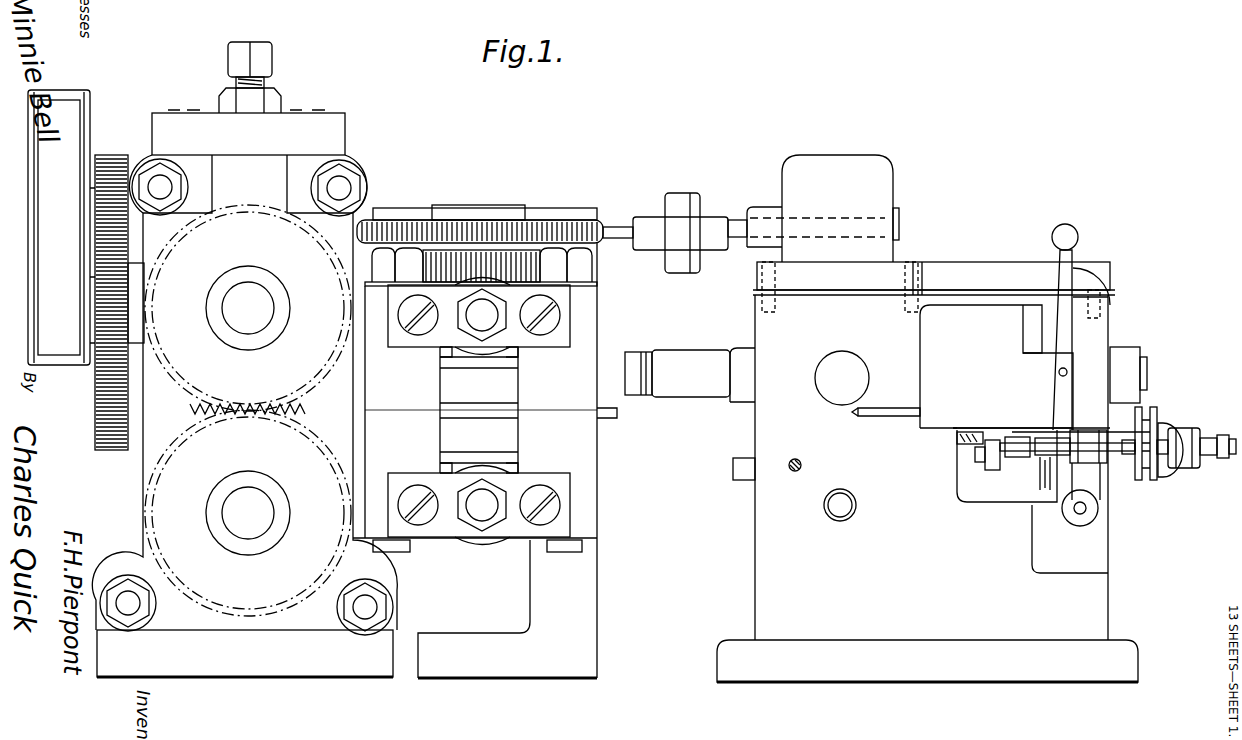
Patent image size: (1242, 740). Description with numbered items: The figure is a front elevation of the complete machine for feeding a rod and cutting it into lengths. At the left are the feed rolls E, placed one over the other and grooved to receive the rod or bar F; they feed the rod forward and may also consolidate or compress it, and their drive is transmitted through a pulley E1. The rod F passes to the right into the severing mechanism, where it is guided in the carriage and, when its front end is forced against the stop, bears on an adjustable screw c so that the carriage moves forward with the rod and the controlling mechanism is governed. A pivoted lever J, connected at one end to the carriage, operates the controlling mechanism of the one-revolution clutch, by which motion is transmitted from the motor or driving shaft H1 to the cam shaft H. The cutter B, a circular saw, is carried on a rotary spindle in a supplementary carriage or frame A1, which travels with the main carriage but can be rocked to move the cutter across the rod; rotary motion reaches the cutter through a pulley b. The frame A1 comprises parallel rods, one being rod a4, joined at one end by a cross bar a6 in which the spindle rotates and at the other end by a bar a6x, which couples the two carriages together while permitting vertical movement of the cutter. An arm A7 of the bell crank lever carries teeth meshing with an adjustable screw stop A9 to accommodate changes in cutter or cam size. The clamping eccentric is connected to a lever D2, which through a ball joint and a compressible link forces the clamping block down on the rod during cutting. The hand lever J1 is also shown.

The pulley E1 is at (63, 112).
The feed rolls E is at (479, 411).
The motor or driving shaft H1 is at (739, 237).
The cam shaft H is at (727, 395).
The rod or bar F is at (878, 420).
The lever D2 is at (1063, 308).
The hand lever J1 is at (1077, 237).
The pivoted lever J is at (988, 443).
The bar a6x is at (1003, 455).
The rod a4 is at (1013, 447).
The arm A7 is at (1078, 483).
The adjustable screw stop A9 is at (1097, 518).
The cutter B is at (1015, 497).
The adjustable screw c is at (1077, 420).
The pulley b is at (1147, 483).
The supplementary carriage or frame A1 is at (1160, 481).
The cross bar a6 is at (1222, 465).